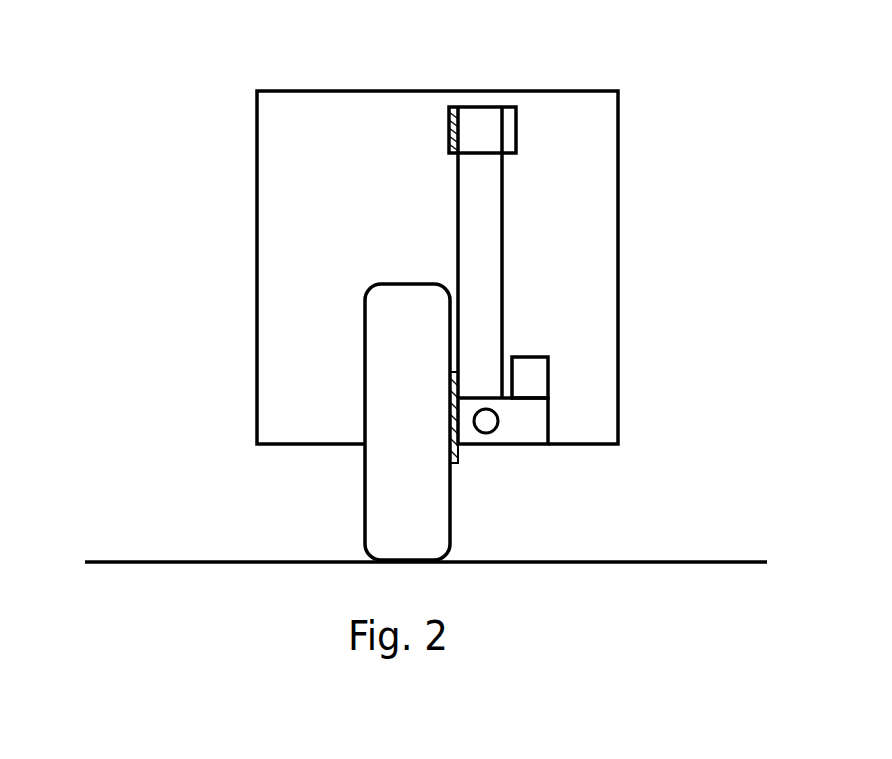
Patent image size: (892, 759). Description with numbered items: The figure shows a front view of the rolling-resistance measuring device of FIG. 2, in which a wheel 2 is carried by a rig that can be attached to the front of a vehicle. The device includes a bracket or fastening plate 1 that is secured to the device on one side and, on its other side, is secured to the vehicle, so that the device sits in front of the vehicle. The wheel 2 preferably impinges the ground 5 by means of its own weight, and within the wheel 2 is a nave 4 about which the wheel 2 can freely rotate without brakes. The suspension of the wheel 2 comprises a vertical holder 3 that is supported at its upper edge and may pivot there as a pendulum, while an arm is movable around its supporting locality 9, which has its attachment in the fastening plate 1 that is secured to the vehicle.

The fastening plate 1 is at (283, 198).
The wheel 2 is at (364, 412).
The vertical holder 3 is at (481, 211).
The nave 4 is at (450, 460).
The ground 5 is at (700, 560).
The supporting locality 9 is at (451, 128).